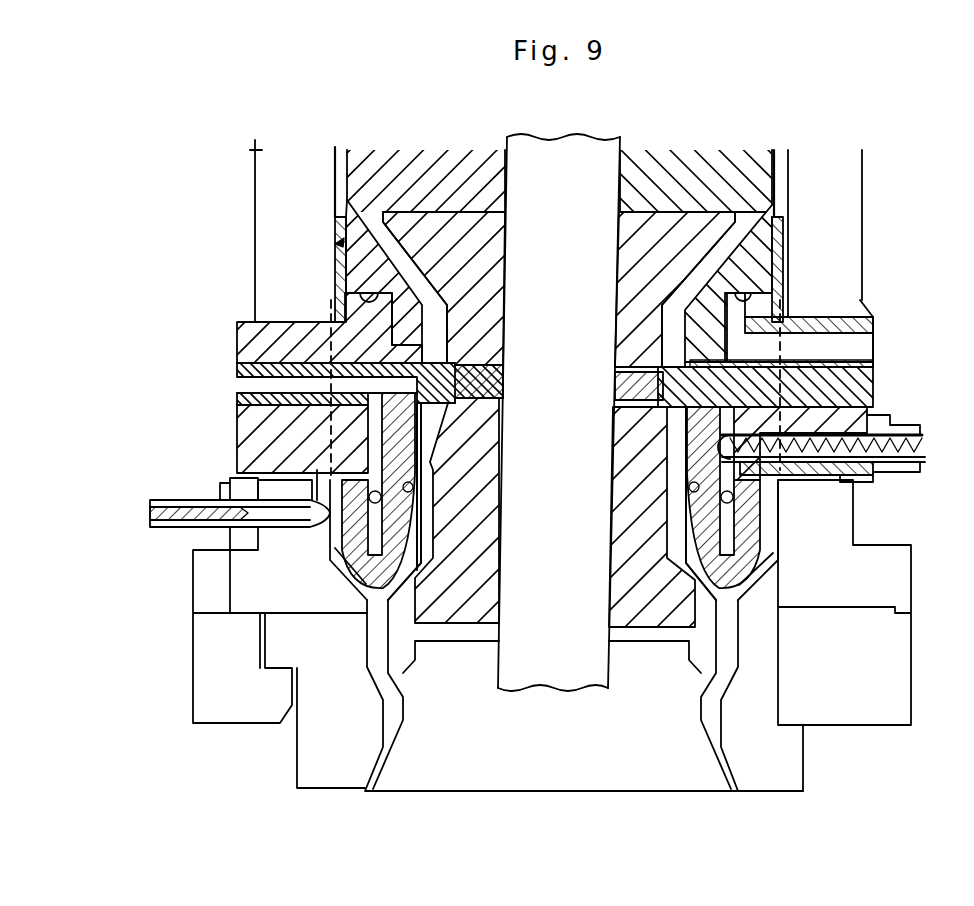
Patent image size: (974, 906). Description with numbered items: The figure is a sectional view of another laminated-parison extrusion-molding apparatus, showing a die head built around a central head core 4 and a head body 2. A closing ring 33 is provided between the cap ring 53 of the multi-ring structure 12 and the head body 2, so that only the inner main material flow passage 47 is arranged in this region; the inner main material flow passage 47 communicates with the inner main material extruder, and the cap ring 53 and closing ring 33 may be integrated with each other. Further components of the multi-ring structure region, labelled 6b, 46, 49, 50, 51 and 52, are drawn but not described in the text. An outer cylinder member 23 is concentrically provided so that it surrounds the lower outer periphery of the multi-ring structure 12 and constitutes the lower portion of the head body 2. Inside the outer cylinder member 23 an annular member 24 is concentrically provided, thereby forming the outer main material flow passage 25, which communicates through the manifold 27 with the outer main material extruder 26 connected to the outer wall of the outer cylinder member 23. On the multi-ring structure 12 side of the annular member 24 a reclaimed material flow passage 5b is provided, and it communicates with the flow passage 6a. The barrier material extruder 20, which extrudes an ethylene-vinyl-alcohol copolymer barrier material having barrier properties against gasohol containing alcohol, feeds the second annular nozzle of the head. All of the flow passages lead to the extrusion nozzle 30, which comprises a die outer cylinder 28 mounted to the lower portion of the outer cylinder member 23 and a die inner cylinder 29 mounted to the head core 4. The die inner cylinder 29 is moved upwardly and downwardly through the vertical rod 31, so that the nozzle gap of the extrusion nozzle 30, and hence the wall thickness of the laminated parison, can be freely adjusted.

The head body 2 is at (255, 150).
The head core 4 is at (673, 270).
The reclaimed material flow passage 5b is at (327, 450).
The flow passage 6a is at (795, 315).
The seal ring 6b is at (335, 243).
The multi-ring structure 12 is at (340, 243).
The barrier material extruder 20 is at (901, 423).
The outer cylinder member 23 is at (193, 615).
The annular member 24 is at (322, 483).
The outer main material flow passage 25 is at (327, 552).
The outer main material extruder 26 is at (152, 499).
The manifold 27 is at (317, 532).
The die outer cylinder 28 is at (777, 766).
The die inner cylinder 29 is at (622, 753).
The extrusion nozzle 30 is at (720, 752).
The vertical rod 31 is at (607, 170).
The closing ring 33 is at (340, 215).
The retainer 46 is at (790, 272).
The inner main material flow passage 47 is at (400, 258).
The center line 49 is at (312, 325).
The plate 50 is at (267, 348).
The gasket 51 is at (237, 402).
The plate 52 is at (262, 430).
The cap ring 53 is at (338, 282).